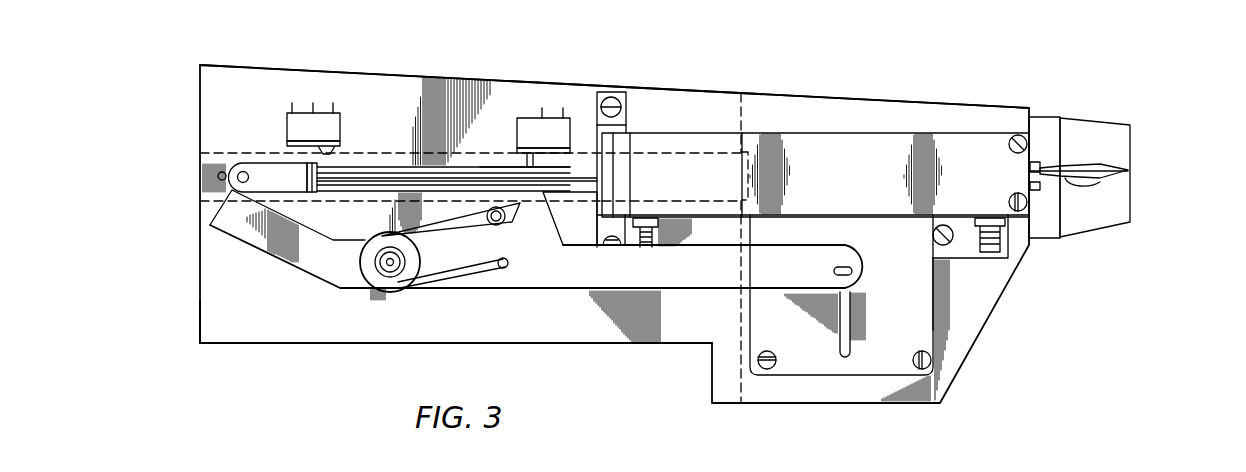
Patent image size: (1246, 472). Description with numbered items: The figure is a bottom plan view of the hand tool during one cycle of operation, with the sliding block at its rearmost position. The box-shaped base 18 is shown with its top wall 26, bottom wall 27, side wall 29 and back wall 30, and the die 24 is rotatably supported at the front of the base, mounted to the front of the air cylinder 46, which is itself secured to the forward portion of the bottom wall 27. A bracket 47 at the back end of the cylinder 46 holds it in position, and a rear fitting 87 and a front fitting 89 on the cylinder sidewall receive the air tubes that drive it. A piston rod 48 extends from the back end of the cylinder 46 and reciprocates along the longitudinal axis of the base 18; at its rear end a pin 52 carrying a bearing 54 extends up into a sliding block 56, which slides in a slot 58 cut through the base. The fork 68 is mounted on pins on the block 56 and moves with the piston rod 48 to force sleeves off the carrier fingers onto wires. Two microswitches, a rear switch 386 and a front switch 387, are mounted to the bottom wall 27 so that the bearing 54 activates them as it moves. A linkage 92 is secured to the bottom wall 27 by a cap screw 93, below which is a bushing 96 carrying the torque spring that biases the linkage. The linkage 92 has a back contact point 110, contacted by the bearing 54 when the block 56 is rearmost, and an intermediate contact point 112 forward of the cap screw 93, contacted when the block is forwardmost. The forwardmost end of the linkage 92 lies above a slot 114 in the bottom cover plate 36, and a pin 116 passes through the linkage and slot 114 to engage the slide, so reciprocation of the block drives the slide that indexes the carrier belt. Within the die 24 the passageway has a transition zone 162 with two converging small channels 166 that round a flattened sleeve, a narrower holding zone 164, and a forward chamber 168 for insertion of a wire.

The base 18 is at (200, 302).
The die 24 is at (1128, 122).
The top wall 26 is at (1032, 117).
The bottom wall 27 is at (237, 345).
The side wall 29 is at (370, 75).
The back wall 30 is at (200, 265).
The bottom cover plate 36 is at (790, 368).
The air cylinder 46 is at (870, 133).
The bracket 47 is at (611, 92).
The piston rod 48 is at (470, 166).
The pin 52 is at (246, 172).
The bearing 54 is at (230, 163).
The sliding block 56 is at (303, 190).
The slot 58 is at (400, 166).
The fork 68 is at (692, 150).
The rear fitting 87 is at (645, 247).
The front fitting 89 is at (998, 253).
The linkage 92 is at (515, 282).
The cap screw 93 is at (388, 265).
The bushing 96 is at (380, 290).
The back contact point 110 is at (230, 195).
The intermediate contact point 112 is at (545, 195).
The slot 114 is at (845, 346).
The pin 116 is at (838, 271).
The transition zone 162 is at (1029, 176).
The holding zone 164 is at (1080, 186).
The small channels 166 is at (1040, 165).
The chamber 168 is at (1128, 178).
The rear switch 386 is at (303, 113).
The front switch 387 is at (527, 117).